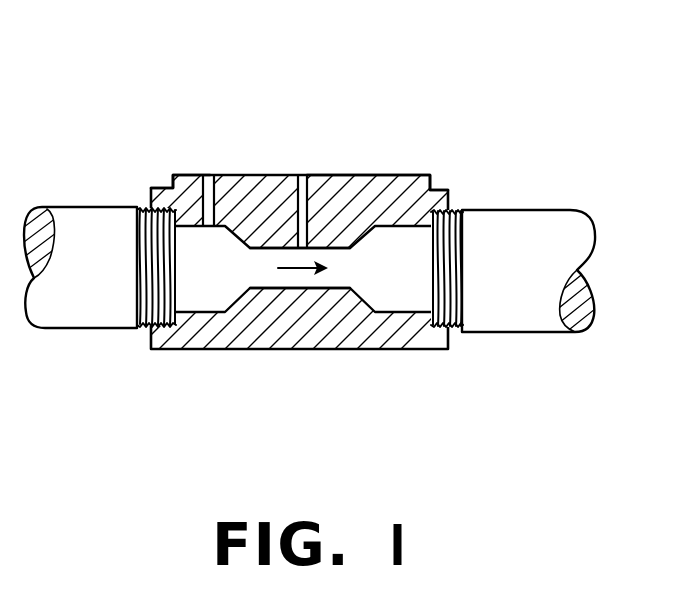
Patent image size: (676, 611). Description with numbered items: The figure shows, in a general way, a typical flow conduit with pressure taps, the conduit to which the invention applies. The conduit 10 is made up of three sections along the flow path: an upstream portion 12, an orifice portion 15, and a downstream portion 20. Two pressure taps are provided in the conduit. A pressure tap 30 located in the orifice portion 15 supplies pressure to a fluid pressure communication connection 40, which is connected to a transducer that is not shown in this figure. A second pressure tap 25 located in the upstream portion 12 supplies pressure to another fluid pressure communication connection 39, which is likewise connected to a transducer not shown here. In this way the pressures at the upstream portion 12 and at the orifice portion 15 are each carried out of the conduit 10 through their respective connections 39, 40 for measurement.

The conduit 10 is at (167, 349).
The upstream portion 12 is at (185, 266).
The orifice portion 15 is at (272, 247).
The downstream portion 20 is at (413, 262).
The pressure tap 25 is at (181, 176).
The pressure tap 30 is at (329, 176).
The fluid pressure communication connection 39 is at (210, 224).
The fluid pressure communication connection 40 is at (303, 246).